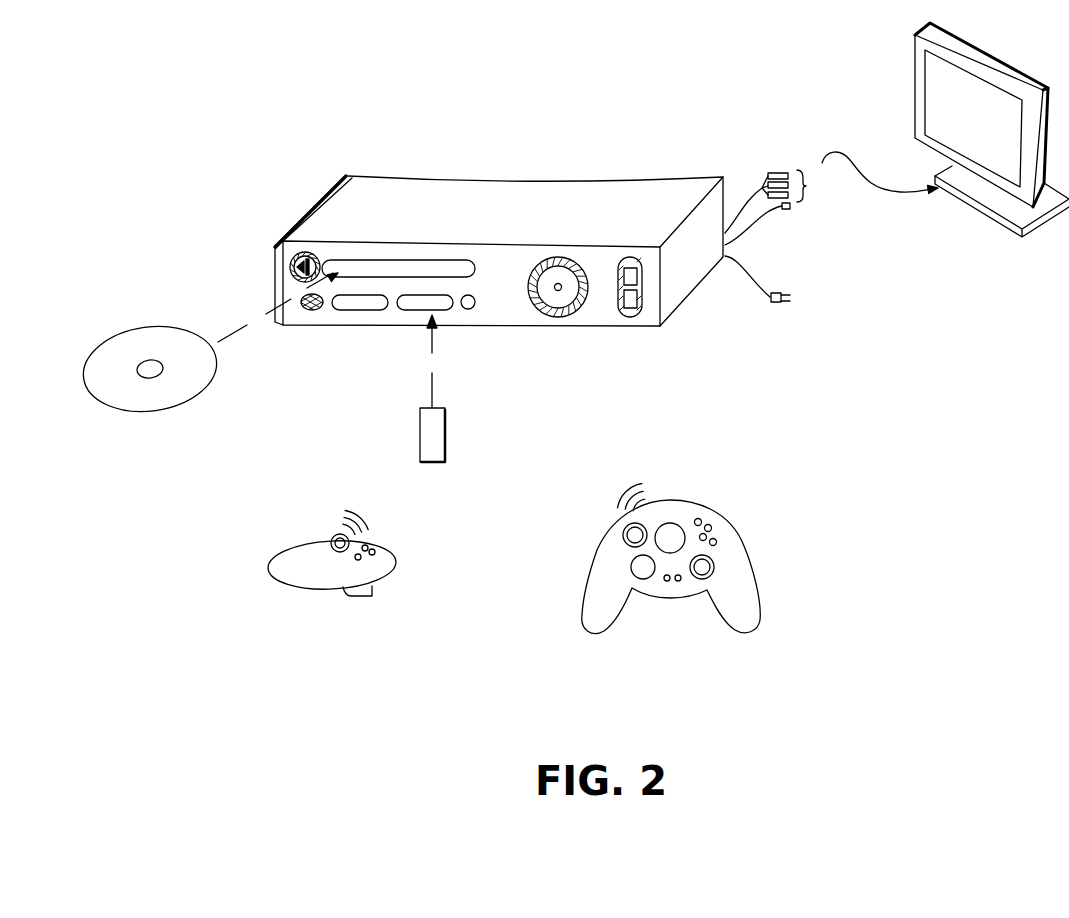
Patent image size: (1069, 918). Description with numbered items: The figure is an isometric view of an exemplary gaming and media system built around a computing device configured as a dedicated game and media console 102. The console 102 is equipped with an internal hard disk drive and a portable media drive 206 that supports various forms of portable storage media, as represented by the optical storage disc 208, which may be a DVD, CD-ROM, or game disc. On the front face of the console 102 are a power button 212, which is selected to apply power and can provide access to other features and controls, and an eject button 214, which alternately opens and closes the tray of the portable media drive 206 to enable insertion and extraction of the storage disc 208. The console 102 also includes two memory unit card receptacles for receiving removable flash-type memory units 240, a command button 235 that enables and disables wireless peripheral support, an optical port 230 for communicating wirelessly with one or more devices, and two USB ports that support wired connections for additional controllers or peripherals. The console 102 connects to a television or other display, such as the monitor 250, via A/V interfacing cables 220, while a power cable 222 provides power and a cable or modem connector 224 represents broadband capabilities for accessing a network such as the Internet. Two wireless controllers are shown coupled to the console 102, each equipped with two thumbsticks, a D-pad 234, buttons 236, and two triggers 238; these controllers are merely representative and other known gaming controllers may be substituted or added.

The computing device configured as a dedicated game and media console 102 is at (530, 140).
The portable media drive 206 is at (405, 258).
The optical storage disc 208 is at (160, 410).
The power button 212 is at (559, 318).
The eject button 214 is at (292, 262).
The A/V interfacing cables 220 is at (770, 174).
The power cable 222 is at (775, 302).
The cable or modem connector 224 is at (786, 209).
The optical port 230 is at (310, 313).
The D-pad 234 is at (631, 567).
The command button 235 is at (468, 310).
The buttons 236 is at (712, 527).
The triggers 238 is at (370, 599).
The removable flash-type memory unit 240 is at (433, 462).
The monitor 250 is at (915, 89).